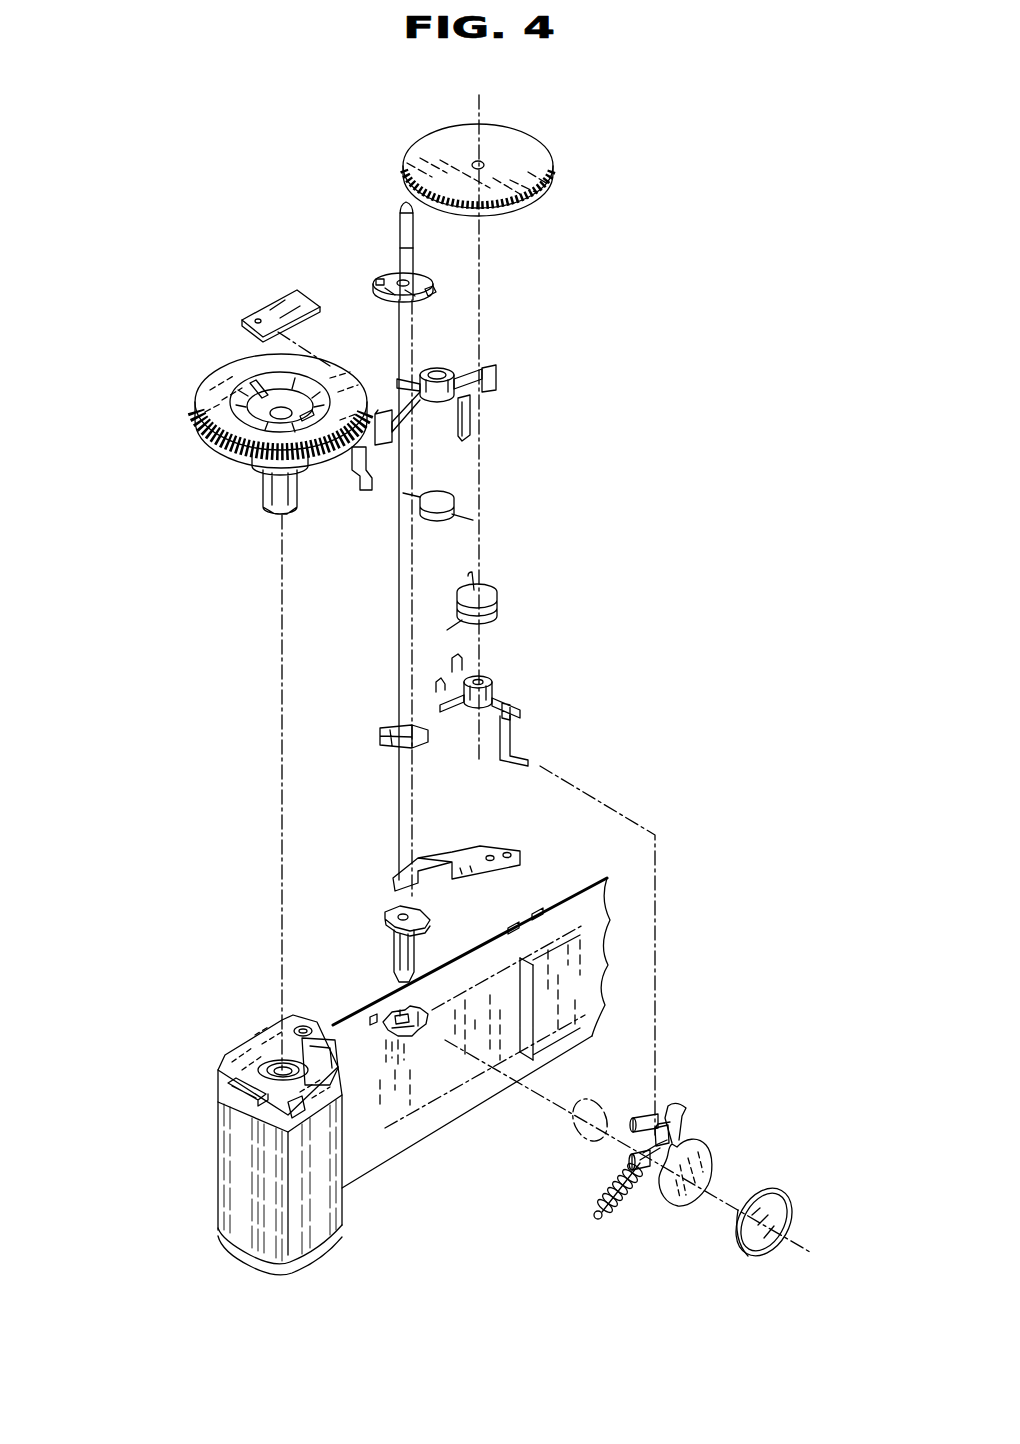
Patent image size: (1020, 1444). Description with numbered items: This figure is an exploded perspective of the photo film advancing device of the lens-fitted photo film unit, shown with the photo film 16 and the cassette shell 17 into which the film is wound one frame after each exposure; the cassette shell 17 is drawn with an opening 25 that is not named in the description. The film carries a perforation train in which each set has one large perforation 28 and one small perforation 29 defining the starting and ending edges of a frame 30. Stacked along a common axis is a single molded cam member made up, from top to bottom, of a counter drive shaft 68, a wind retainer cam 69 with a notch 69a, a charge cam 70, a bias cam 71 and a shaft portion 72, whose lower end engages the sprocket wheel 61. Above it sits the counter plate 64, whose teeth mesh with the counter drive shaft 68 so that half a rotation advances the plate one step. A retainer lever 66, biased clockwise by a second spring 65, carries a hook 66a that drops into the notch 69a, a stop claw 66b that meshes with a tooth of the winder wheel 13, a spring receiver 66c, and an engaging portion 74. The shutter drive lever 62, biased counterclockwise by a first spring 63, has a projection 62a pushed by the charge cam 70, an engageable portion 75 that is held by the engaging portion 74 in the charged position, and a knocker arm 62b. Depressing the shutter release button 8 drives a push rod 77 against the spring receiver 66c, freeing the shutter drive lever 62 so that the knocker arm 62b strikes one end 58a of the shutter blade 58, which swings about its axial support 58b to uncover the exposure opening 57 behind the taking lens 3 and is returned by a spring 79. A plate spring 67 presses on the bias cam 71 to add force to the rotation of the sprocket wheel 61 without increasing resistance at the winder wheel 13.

The taking lens 3 is at (768, 1240).
The shutter release button 8 is at (250, 302).
The winder wheel 13 is at (238, 466).
The photo film 16 is at (487, 1037).
The cassette shell 17 is at (234, 1142).
The bearing hole 25 is at (270, 1060).
The large perforation 28 is at (540, 918).
The small perforation 29 is at (514, 930).
The frame 30 is at (545, 1000).
The exposure opening 57 is at (575, 1146).
The shutter blade 58 is at (697, 1111).
The end of the shutter blade 58a is at (665, 1120).
The axial support 58b is at (635, 1117).
The sprocket wheel 61 is at (438, 1056).
The shutter drive lever 62 is at (476, 715).
The projection 62a is at (436, 692).
The knocker arm 62b is at (522, 768).
The first spring 63 is at (522, 604).
The counter plate 64 is at (582, 162).
The second spring 65 is at (482, 500).
The retainer lever 66 is at (482, 378).
The hook 66a is at (436, 369).
The stop claw 66b is at (378, 412).
The spring receiver 66c is at (476, 427).
The plate spring 67 is at (437, 848).
The counter drive shaft 68 is at (402, 211).
The wind retainer cam 69 is at (355, 261).
The notch 69a is at (438, 292).
The charge cam 70 is at (380, 745).
The bias cam 71 is at (390, 908).
The shaft portion 72 is at (396, 950).
The engaging portion 74 is at (497, 389).
The engageable portion 75 is at (514, 711).
The push rod 77 is at (364, 495).
The spring 79 is at (612, 1198).